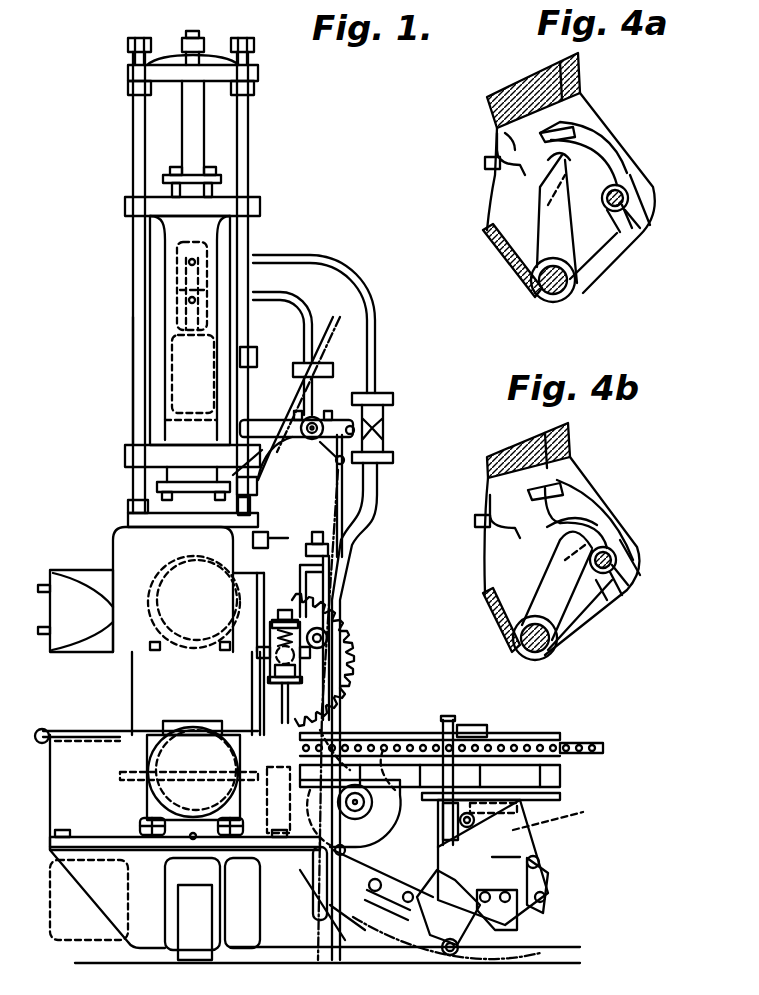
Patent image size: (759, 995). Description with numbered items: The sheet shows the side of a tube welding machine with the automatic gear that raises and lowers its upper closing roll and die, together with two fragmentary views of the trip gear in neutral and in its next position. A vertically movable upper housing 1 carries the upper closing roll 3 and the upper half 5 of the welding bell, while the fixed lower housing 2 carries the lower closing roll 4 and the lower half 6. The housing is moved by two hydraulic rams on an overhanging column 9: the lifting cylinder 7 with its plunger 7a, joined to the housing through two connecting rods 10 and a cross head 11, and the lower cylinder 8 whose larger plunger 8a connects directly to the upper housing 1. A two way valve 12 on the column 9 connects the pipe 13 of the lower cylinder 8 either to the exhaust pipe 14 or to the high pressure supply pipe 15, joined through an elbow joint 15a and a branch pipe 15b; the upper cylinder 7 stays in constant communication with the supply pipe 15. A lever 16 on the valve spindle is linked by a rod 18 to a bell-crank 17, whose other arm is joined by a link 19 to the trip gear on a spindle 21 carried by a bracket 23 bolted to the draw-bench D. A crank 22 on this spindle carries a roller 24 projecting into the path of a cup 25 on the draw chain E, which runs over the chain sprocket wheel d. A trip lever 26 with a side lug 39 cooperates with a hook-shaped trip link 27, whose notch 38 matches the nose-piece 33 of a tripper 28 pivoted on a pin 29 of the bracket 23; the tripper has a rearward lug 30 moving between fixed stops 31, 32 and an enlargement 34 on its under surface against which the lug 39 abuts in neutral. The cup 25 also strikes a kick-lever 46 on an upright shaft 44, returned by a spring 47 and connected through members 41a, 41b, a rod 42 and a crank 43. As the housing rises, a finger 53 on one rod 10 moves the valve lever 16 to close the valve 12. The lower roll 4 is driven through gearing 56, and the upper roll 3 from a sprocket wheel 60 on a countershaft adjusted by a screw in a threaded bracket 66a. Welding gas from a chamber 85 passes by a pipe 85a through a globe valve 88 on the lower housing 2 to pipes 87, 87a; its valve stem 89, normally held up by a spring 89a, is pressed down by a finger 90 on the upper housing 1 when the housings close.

In FIG. 1, the upper housing 1 is at (130, 547).
In FIG. 1, the lower housing 2 is at (107, 827).
In FIG. 1, the upper closing roll 3 is at (120, 650).
In FIG. 1, the lower closing roll 4 is at (215, 751).
In FIG. 1, the upper half of welding bell 5 is at (100, 600).
In FIG. 1, the lower half of welding bell 6 is at (95, 731).
In FIG. 1, the upper ram cylinder 7 is at (172, 243).
In FIG. 1, the lifting ram plunger 7a is at (185, 125).
In FIG. 1, the lower ram cylinder 8 is at (163, 352).
In FIG. 1, the lower ram plunger 8a is at (185, 500).
In FIG. 1, the column 9 is at (132, 390).
In FIG. 1, the connecting rods 10 is at (248, 232).
In FIG. 1, the cross head 11 is at (207, 62).
In FIG. 1, the valve 12 is at (311, 441).
In FIG. 1, the pipe 13 is at (275, 298).
In FIG. 1, the exhaust pipe 14 is at (210, 435).
In FIG. 1, the high pressure supply pipe 15 is at (373, 494).
In FIG. 1, the elbow joint 15a is at (380, 412).
In FIG. 1, the branch pipe 15b is at (345, 425).
In FIG. 1, the valve lever 16 is at (327, 325).
In FIG. 1, the bell-crank 17 is at (330, 875).
In FIG. 1, the rod 18 is at (340, 488).
In FIG. 1, the link 19 is at (395, 905).
In FIG. 1, the spindle 21 is at (448, 955).
In FIG. 4A, the spindle 21 is at (552, 298).
In FIG. 4B, the spindle 21 is at (528, 652).
In FIG. 1, the crank 22 is at (540, 953).
In FIG. 1, the bracket 23 is at (515, 843).
In FIG. 1, the roller 24 is at (458, 898).
In FIG. 1, the cup 25 is at (515, 918).
In FIG. 4A, the trip lever 26 is at (552, 237).
In FIG. 4B, the trip lever 26 is at (545, 590).
In FIG. 4A, the trip link 27 is at (487, 168).
In FIG. 4B, the trip link 27 is at (490, 502).
In FIG. 4A, the tripper 28 is at (595, 140).
In FIG. 4B, the tripper 28 is at (583, 517).
In FIG. 4A, the pin 29 is at (627, 195).
In FIG. 4B, the pin 29 is at (615, 566).
In FIG. 4A, the lug 30 is at (625, 226).
In FIG. 4B, the lug 30 is at (615, 595).
In FIG. 4A, the fixed stop 31 is at (645, 201).
In FIG. 4B, the fixed stop 31 is at (630, 556).
In FIG. 4A, the fixed stop 32 is at (612, 252).
In FIG. 4B, the fixed stop 32 is at (575, 622).
In FIG. 4A, the nose-piece 33 is at (562, 126).
In FIG. 4B, the nose-piece 33 is at (560, 486).
In FIG. 4B, the enlargement 34 is at (575, 515).
In FIG. 4A, the notch 38 is at (495, 137).
In FIG. 4A, the lug 39 is at (550, 187).
In FIG. 4B, the lug 39 is at (565, 553).
In FIG. 1, the link 41a is at (548, 882).
In FIG. 1, the connecting member 41b is at (560, 818).
In FIG. 1, the rod 42 is at (500, 797).
In FIG. 1, the crank 43 is at (462, 805).
In FIG. 1, the upright shaft 44 is at (443, 805).
In FIG. 1, the kick-lever 46 is at (468, 725).
In FIG. 1, the spring 47 is at (476, 820).
In FIG. 1, the finger 53 is at (267, 457).
In FIG. 1, the gearing 56 is at (340, 702).
In FIG. 1, the sprocket wheel 60 is at (356, 638).
In FIG. 1, the threaded bracket 66a is at (325, 562).
In FIG. 1, the chamber 85 is at (262, 938).
In FIG. 1, the pipe 85a is at (262, 850).
In FIG. 1, the pipe 87 is at (50, 728).
In FIG. 1, the second pipe 87a is at (135, 777).
In FIG. 1, the globe valve 88 is at (268, 675).
In FIG. 1, the valve stem 89 is at (300, 622).
In FIG. 1, the compressed spring 89a is at (264, 652).
In FIG. 1, the finger 90 is at (283, 538).
In FIG. 1, the draw-bench D is at (535, 733).
In FIG. 1, the draw chain E is at (595, 744).
In FIG. 1, the chain sprocket wheel d is at (383, 750).